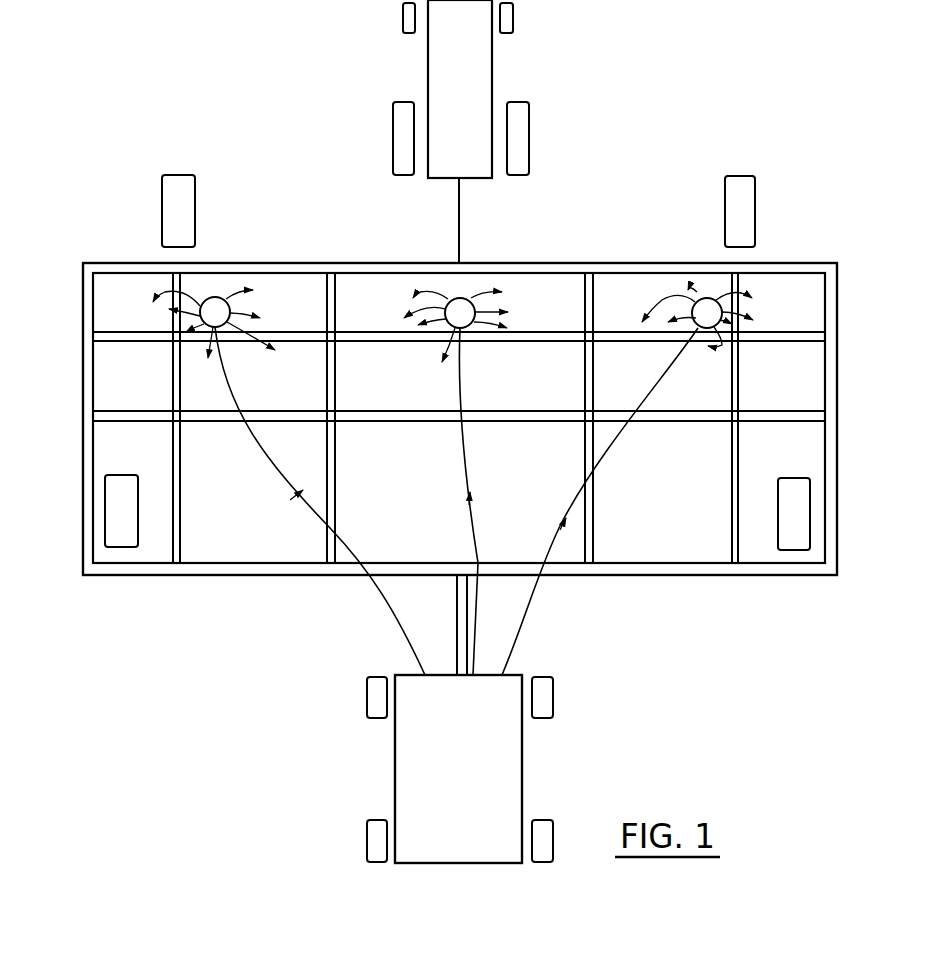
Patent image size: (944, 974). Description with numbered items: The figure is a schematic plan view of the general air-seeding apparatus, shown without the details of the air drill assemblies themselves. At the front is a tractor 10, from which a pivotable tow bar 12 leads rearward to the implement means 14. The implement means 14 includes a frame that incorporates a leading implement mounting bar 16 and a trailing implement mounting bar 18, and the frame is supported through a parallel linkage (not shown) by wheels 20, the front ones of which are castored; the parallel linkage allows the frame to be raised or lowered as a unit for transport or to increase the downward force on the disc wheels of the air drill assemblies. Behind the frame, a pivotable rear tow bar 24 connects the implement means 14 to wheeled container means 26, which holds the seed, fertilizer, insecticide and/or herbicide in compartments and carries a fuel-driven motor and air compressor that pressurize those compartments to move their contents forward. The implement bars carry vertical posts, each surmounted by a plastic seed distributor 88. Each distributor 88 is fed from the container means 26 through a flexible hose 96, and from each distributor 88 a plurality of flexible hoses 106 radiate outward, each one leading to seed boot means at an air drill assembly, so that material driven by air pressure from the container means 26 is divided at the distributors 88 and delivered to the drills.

The tractor 10 is at (502, 55).
The pivotable tow bar 12 is at (461, 217).
The implement means 14 is at (83, 421).
The leading implement mounting bar 16 is at (520, 342).
The trailing implement mounting bar 18 is at (503, 421).
The wheels 20 is at (178, 214).
The pivotable rear tow bar 24 is at (455, 617).
The wheeled container means 26 is at (478, 777).
The seed distributor 88 is at (212, 317).
The flexible hose 96 is at (473, 516).
The flexible hose 106 is at (167, 293).